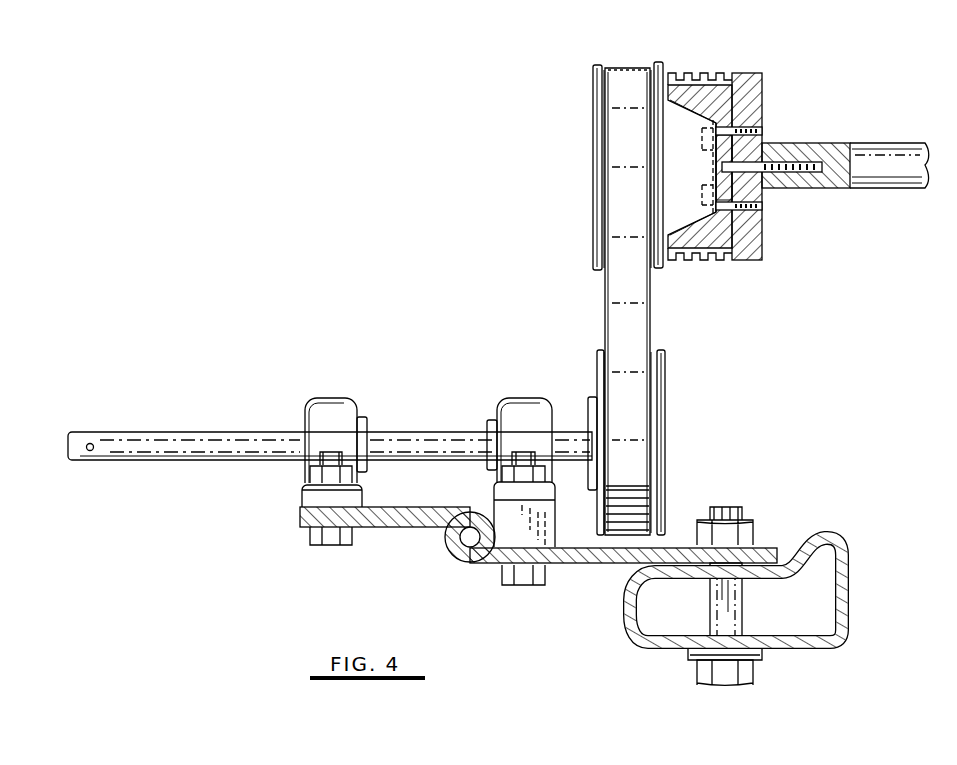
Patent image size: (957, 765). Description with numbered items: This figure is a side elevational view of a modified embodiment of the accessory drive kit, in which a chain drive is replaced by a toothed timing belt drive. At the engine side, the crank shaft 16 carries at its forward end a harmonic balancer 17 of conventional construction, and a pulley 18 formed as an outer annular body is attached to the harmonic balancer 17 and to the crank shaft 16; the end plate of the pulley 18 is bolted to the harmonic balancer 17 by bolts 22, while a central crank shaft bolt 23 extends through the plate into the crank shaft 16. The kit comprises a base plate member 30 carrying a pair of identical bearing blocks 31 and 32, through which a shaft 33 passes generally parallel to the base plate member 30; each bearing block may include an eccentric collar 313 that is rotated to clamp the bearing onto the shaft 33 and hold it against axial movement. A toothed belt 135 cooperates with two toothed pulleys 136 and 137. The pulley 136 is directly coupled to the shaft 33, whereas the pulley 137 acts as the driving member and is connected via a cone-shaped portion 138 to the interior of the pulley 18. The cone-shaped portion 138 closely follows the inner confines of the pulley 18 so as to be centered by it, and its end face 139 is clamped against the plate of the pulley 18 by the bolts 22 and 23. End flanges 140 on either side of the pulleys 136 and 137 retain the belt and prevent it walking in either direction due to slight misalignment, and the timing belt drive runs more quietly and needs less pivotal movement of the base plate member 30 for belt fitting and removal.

The crank shaft 16 is at (890, 160).
The harmonic balancer 17 is at (752, 92).
The pulley 18 is at (716, 78).
The bolts 22 is at (790, 162).
The central crank shaft bolt 23 is at (760, 120).
The base plate member 30 is at (484, 572).
The bearing block 31 is at (332, 412).
The bearing block 32 is at (523, 417).
The shaft 33 is at (170, 438).
The collar 313 is at (490, 420).
The toothed belt 135 is at (622, 283).
The toothed pulley 136 is at (667, 422).
The toothed pulley 137 is at (592, 153).
The cone-shaped portion 138 is at (692, 108).
The end face 139 is at (722, 190).
The end flanges 140 is at (598, 68).